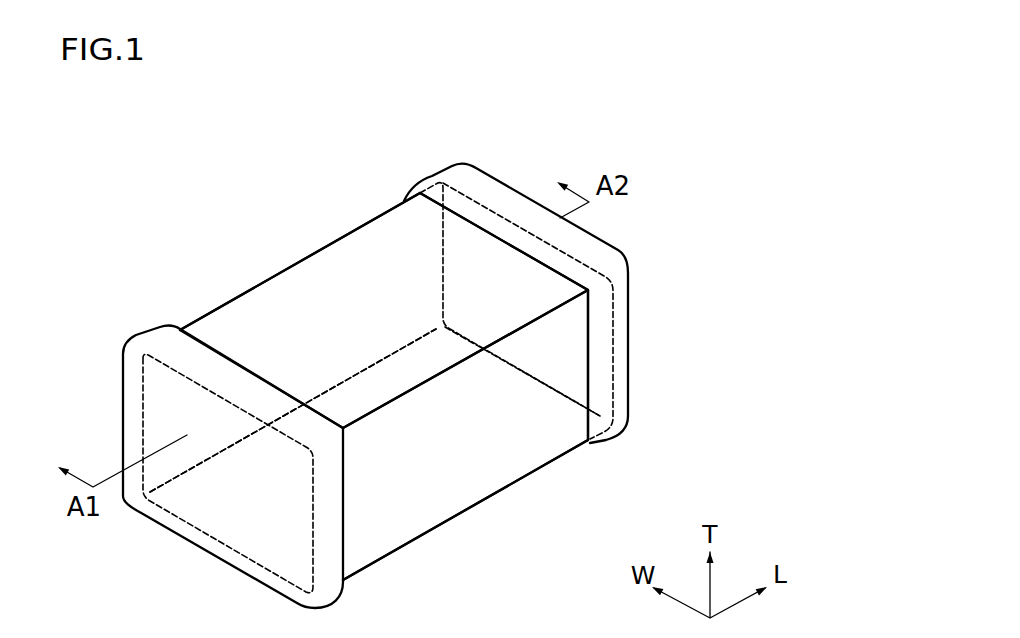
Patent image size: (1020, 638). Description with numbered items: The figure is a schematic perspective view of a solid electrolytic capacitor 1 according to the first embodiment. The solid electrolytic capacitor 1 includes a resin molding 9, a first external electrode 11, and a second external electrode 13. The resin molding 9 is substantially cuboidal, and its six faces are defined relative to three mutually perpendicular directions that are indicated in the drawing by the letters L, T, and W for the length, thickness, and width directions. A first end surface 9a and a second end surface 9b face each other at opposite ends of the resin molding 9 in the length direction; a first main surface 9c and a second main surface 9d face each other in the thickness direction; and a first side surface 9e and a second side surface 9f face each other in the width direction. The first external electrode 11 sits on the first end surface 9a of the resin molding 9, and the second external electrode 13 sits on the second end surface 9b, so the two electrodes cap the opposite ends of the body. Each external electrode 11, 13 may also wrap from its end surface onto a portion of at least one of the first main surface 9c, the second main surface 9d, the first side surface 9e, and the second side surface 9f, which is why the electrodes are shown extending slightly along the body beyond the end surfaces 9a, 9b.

The solid electrolytic capacitor 1 is at (111, 194).
The resin molding 9 is at (401, 238).
The first end surface 9a is at (224, 511).
The second end surface 9b is at (573, 328).
The first main surface 9c is at (420, 513).
The second main surface 9d is at (347, 258).
The first side surface 9e is at (492, 470).
The second side surface 9f is at (260, 320).
The first external electrode 11 is at (130, 384).
The second external electrode 13 is at (593, 254).